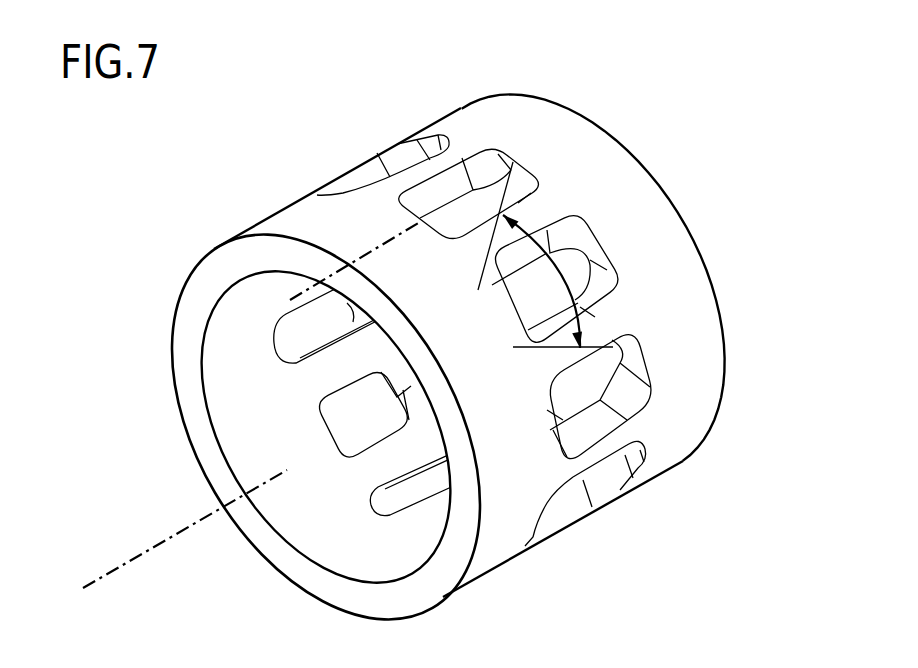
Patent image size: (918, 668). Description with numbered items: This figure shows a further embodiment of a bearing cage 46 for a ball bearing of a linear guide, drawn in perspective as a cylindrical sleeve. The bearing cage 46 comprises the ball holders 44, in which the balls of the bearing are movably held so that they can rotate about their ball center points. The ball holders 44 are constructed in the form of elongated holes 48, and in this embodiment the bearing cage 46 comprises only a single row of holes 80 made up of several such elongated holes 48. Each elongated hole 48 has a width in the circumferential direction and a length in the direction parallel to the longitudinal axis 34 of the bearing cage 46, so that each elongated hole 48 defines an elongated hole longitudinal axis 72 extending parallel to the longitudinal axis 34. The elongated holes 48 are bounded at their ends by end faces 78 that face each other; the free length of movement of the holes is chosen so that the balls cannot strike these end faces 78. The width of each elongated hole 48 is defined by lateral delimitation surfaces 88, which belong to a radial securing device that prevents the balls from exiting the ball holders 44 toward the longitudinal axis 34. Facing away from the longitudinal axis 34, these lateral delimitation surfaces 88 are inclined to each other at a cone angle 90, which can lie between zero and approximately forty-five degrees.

The longitudinal axis 34 is at (148, 552).
The ball holder 44 is at (400, 163).
The bearing cage 46 is at (370, 102).
The elongated hole 48 is at (590, 490).
The elongated hole longitudinal axis 72 is at (372, 253).
The end face 78 is at (600, 258).
The row of holes 80 is at (347, 157).
The lateral delimitation surface 88 is at (512, 266).
The cone angle 90 is at (540, 296).